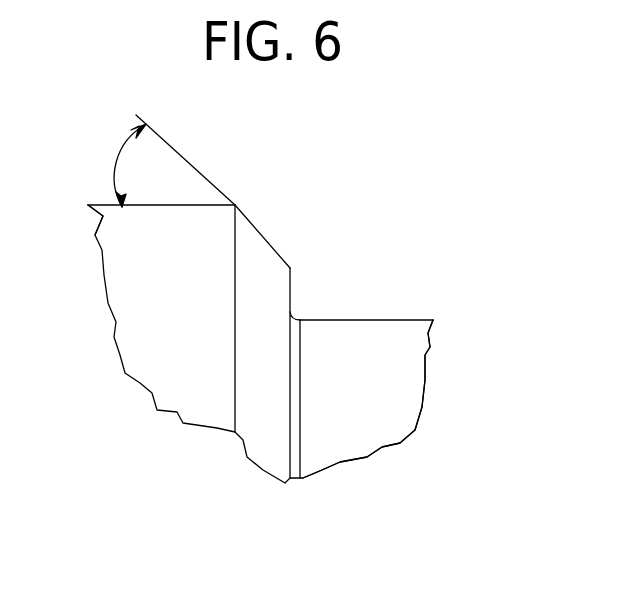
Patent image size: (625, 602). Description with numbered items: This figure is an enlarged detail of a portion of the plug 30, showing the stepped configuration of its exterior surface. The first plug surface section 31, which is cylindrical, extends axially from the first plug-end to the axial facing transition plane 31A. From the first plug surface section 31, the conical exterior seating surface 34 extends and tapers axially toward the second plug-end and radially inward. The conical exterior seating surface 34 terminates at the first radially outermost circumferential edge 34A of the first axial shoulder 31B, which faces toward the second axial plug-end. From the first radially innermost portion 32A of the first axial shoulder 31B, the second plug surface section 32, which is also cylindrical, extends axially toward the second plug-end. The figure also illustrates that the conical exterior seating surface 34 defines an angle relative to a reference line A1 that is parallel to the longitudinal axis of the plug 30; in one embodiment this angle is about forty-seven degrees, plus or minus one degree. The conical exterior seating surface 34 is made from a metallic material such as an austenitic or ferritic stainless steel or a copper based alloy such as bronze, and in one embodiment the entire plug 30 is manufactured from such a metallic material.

The plug 30 is at (348, 130).
The first plug surface section 31 is at (173, 204).
The axial facing transition plane 31A is at (236, 203).
The first axial shoulder 31B is at (292, 287).
The second plug surface section 32 is at (399, 388).
The first radially innermost portion 32A is at (294, 317).
The conical exterior seating surface 34 is at (271, 243).
The first radially outermost circumferential edge 34A is at (291, 268).
The reference line A1 is at (99, 220).